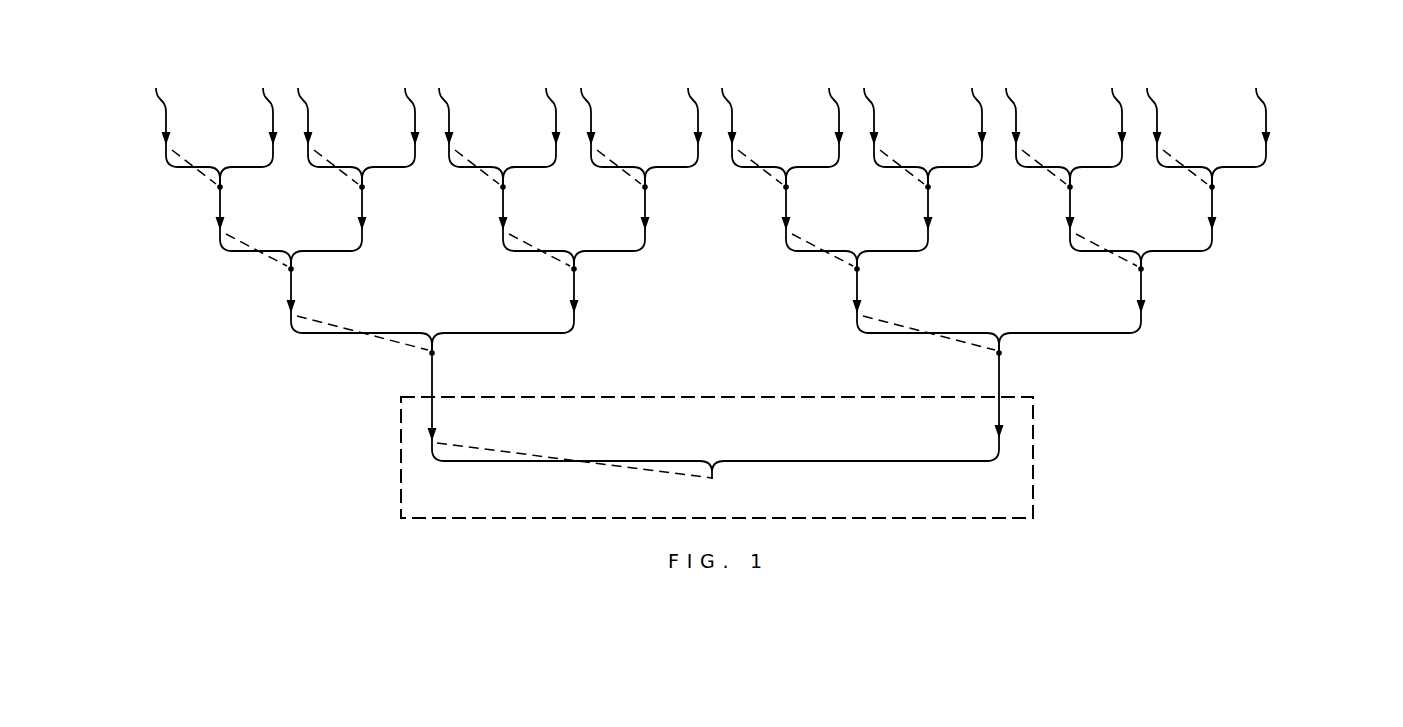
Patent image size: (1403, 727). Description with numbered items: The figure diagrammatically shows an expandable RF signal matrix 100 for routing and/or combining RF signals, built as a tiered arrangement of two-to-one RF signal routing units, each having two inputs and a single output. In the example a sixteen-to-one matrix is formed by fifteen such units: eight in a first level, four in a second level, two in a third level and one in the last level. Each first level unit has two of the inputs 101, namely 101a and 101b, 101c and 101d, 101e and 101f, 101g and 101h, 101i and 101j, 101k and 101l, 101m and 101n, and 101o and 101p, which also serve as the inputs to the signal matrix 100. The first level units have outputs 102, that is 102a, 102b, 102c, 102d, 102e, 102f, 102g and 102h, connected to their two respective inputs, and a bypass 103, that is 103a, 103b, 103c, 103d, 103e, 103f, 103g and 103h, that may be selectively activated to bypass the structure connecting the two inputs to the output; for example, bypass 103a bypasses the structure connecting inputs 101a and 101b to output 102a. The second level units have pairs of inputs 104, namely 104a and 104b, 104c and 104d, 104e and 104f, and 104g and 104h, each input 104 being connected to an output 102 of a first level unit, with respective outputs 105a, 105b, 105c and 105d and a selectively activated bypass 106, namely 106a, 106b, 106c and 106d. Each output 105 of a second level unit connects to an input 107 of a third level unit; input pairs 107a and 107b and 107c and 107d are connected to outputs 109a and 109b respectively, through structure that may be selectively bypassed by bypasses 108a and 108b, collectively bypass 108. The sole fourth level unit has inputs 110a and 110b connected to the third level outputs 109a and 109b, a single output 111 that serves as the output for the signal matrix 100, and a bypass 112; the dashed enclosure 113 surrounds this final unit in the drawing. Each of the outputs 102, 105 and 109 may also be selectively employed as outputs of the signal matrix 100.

The signal matrix 100 is at (1089, 423).
The inputs 101 is at (1294, 122).
The input 101a is at (177, 126).
The input 101b is at (254, 126).
The input 101c is at (330, 126).
The input 101d is at (396, 126).
The input 101e is at (471, 126).
The input 101f is at (535, 126).
The input 101g is at (613, 126).
The input 101h is at (679, 126).
The input 101i is at (754, 126).
The input 101j is at (818, 126).
The input 101k is at (896, 126).
The input 101l is at (961, 126).
The input 101m is at (1036, 126).
The input 101n is at (1104, 126).
The input 101o is at (1179, 126).
The input 101p is at (1256, 126).
The outputs 102 is at (1309, 181).
The output 102a is at (224, 187).
The output 102b is at (366, 187).
The output 102c is at (507, 187).
The output 102d is at (649, 187).
The output 102e is at (790, 187).
The output 102f is at (932, 187).
The output 102g is at (1074, 187).
The output 102h is at (1216, 187).
The bypass 103 is at (1297, 152).
The bypass 103a is at (174, 152).
The bypass 103b is at (316, 152).
The bypass 103c is at (457, 152).
The bypass 103d is at (599, 152).
The bypass 103e is at (740, 152).
The bypass 103f is at (882, 152).
The bypass 103g is at (1024, 152).
The bypass 103h is at (1165, 152).
The inputs 104 is at (1245, 223).
The input 104a is at (214, 231).
The input 104b is at (356, 231).
The input 104c is at (497, 231).
The input 104d is at (639, 231).
The input 104e is at (780, 231).
The input 104f is at (922, 231).
The input 104g is at (1064, 231).
The input 104h is at (1206, 231).
The outputs 105 is at (1237, 286).
The output 105a is at (295, 270).
The output 105b is at (578, 270).
The output 105c is at (861, 270).
The output 105d is at (1145, 270).
The bypass 106 is at (1225, 262).
The bypass 106a is at (265, 260).
The bypass 106b is at (548, 260).
The bypass 106c is at (831, 260).
The bypass 106d is at (1115, 260).
The input 107 is at (1194, 311).
The input 107a is at (285, 313).
The input 107b is at (568, 313).
The input 107c is at (851, 313).
The input 107d is at (1135, 313).
The bypasses 108 is at (1167, 333).
The bypass 108a is at (362, 342).
The bypass 108b is at (929, 342).
The outputs 109 is at (1085, 364).
The output 109a is at (428, 355).
The output 109b is at (1003, 355).
The input 110a is at (438, 440).
The input 110b is at (996, 440).
The output 111 is at (716, 480).
The bypass 112 is at (640, 482).
The output stage 113 is at (398, 471).